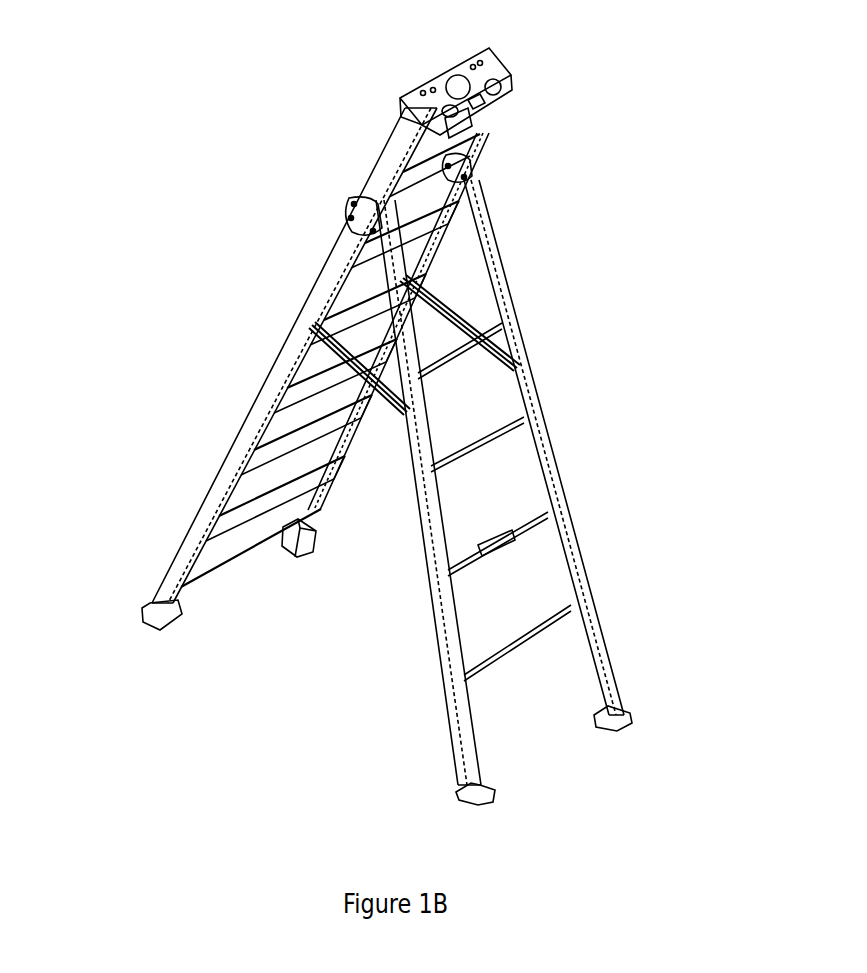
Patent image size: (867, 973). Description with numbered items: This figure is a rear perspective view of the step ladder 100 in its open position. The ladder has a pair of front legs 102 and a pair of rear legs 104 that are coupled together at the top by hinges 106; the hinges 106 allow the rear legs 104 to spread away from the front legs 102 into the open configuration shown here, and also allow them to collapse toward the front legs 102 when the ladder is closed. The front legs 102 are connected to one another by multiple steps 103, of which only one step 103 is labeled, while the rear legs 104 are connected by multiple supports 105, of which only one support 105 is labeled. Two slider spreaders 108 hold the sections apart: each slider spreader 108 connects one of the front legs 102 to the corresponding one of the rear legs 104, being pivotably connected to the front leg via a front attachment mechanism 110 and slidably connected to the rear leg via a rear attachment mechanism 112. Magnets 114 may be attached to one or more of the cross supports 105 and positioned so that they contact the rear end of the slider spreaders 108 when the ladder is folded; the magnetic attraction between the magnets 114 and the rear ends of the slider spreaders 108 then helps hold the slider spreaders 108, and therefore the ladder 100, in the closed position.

The step ladder 100 is at (205, 46).
The front legs 102 is at (318, 492).
The step 103 is at (240, 545).
The rear legs 104 is at (447, 597).
The support 105 is at (547, 622).
The hinges 106 is at (443, 168).
The slider spreader 108 is at (327, 320).
The front attachment mechanism 110 is at (287, 347).
The rear attachment mechanism 112 is at (418, 432).
The magnets 114 is at (547, 512).